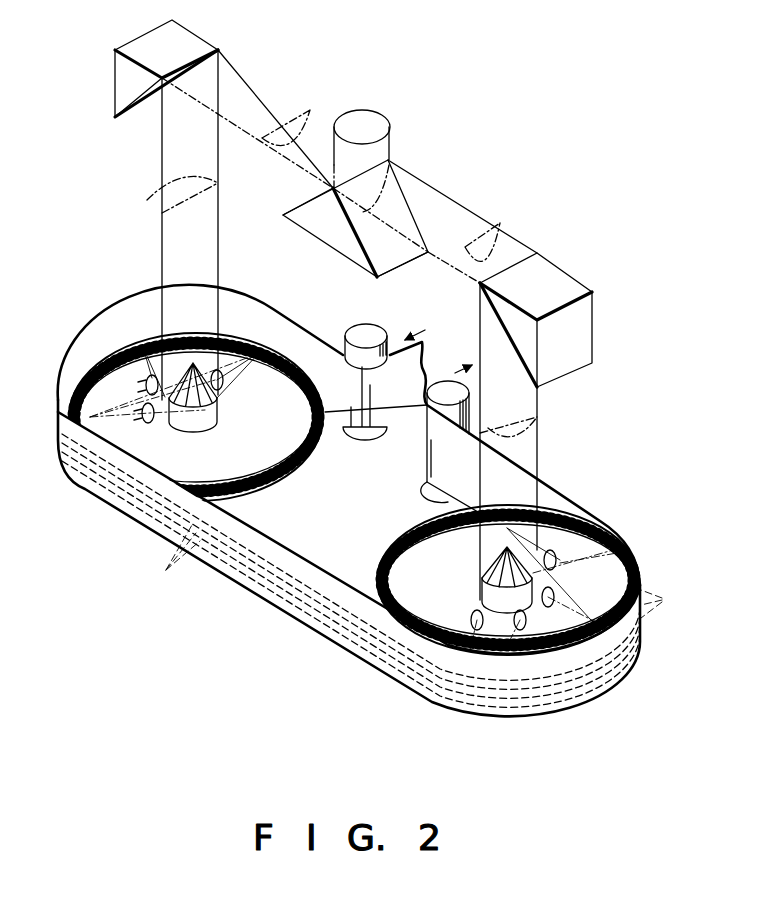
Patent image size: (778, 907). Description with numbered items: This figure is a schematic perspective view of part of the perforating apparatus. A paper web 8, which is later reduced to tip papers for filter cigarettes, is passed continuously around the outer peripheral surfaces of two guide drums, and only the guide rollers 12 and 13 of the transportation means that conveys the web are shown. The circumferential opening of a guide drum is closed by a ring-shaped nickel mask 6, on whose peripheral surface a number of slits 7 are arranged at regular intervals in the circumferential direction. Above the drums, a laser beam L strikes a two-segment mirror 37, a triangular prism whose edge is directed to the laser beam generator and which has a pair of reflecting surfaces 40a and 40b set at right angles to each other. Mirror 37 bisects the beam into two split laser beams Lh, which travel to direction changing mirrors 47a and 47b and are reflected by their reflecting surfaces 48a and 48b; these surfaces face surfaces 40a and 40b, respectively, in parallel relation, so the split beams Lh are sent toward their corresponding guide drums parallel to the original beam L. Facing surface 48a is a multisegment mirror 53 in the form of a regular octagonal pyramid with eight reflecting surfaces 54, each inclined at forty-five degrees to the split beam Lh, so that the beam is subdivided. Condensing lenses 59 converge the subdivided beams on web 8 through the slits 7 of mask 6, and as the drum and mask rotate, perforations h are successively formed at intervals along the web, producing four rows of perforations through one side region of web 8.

The mask 6 is at (296, 453).
The slits 7 is at (290, 470).
The web 8 is at (303, 346).
The guide roller 12 is at (360, 332).
The guide roller 13 is at (443, 388).
The two-segment mirror 37 is at (313, 227).
The reflecting surface 40a is at (302, 208).
The reflecting surface 40b is at (402, 254).
The direction changing mirror 47a is at (187, 46).
The direction changing mirror 47b is at (558, 282).
The reflecting surface 48a is at (138, 117).
The reflecting surface 48b is at (511, 343).
The multisegment mirror 53 is at (210, 421).
The reflecting surfaces 54 is at (216, 397).
The condensing lens 59 is at (146, 387).
The laser beam L is at (364, 105).
The split laser beam Lh is at (149, 199).
The perforations h is at (416, 571).